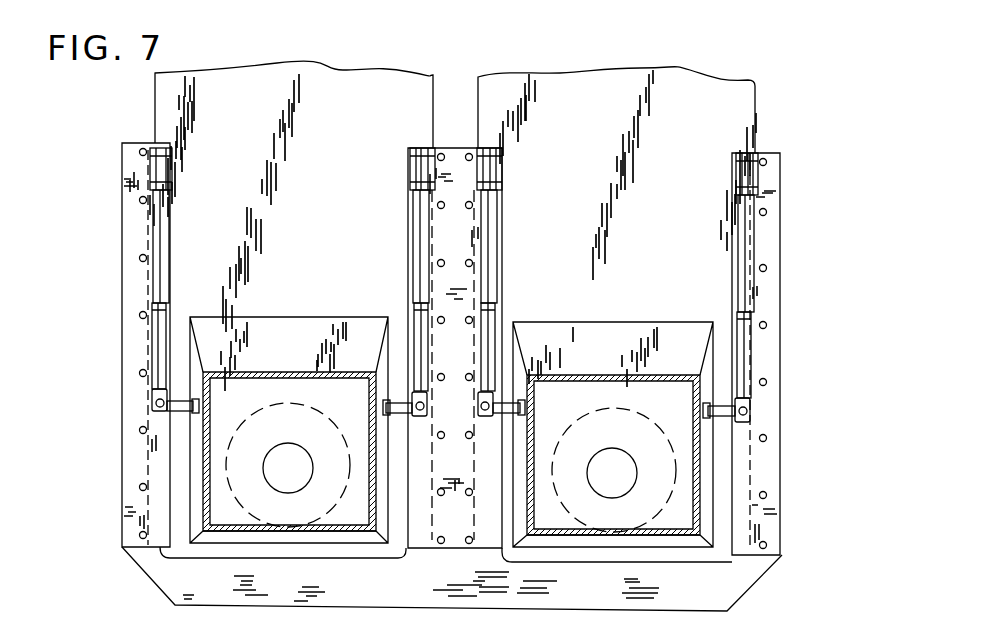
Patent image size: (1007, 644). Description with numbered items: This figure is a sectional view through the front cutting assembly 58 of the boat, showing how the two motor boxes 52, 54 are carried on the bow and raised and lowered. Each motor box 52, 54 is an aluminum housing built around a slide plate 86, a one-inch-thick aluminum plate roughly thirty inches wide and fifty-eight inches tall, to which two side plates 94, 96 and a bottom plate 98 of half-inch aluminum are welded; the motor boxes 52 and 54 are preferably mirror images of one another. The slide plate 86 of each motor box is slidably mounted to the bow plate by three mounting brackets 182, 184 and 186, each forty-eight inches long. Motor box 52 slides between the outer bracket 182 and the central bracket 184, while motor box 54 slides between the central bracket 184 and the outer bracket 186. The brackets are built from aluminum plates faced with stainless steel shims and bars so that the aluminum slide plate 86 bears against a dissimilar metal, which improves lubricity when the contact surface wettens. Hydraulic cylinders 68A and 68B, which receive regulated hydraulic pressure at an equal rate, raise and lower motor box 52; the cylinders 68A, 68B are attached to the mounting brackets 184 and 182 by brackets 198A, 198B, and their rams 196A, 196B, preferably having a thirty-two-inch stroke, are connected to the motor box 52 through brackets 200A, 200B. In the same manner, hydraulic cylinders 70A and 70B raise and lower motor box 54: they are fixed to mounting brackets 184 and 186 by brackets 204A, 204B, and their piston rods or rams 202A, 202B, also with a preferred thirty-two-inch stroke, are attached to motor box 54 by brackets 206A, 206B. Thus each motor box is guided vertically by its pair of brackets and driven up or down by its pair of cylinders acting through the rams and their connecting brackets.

The motor box 52 is at (283, 328).
The motor box 54 is at (600, 330).
The front cutting assembly 58 is at (784, 99).
The hydraulic cylinder 68A is at (415, 230).
The hydraulic cylinder 68B is at (163, 226).
The hydraulic cylinder 70A is at (498, 243).
The hydraulic cylinder 70B is at (738, 240).
The slide plate 86 is at (343, 73).
The side plate 94 is at (210, 462).
The side plate 96 is at (368, 462).
The bottom plate 98 is at (252, 530).
The mounting bracket 182 is at (128, 473).
The mounting bracket 184 is at (448, 545).
The mounting bracket 186 is at (775, 470).
The piston or ram 196A is at (410, 318).
The piston or ram 196B is at (163, 318).
The bracket 198A is at (417, 170).
The bracket 198B is at (163, 168).
The bracket 200A is at (398, 400).
The bracket 200B is at (183, 417).
The piston rod or ram 202A is at (487, 330).
The piston rod or ram 202B is at (740, 337).
The bracket 204A is at (488, 172).
The bracket 204B is at (740, 177).
The bracket 206A is at (497, 400).
The bracket 206B is at (717, 422).